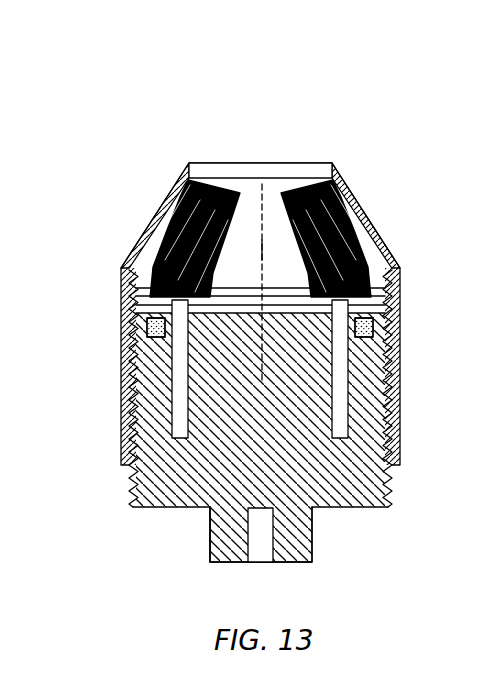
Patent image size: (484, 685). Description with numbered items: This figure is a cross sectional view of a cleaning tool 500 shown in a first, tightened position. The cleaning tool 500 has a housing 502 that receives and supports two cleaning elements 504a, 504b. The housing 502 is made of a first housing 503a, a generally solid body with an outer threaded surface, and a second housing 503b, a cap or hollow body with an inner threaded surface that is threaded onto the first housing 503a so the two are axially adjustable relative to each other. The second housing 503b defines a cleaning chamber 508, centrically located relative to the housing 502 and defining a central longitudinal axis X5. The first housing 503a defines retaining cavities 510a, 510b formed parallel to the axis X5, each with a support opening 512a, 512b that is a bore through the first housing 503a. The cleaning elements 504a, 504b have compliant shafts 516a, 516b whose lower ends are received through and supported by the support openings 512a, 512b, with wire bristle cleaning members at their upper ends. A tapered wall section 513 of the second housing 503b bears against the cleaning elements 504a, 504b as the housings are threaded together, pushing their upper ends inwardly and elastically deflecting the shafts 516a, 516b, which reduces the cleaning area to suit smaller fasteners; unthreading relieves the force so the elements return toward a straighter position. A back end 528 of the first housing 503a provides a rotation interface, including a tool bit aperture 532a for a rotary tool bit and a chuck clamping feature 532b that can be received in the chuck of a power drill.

The cleaning tool 500 is at (253, 108).
The housing 502 is at (112, 292).
The first housing 503a is at (137, 489).
The second housing 503b is at (160, 207).
The cleaning element 504a is at (158, 252).
The cleaning element 504b is at (365, 252).
The cleaning chamber 508 is at (263, 181).
The tapered wall section 513 is at (300, 170).
The retaining cavity 510a is at (158, 352).
The retaining cavity 510b is at (360, 362).
The support opening 512a is at (105, 351).
The support opening 512b is at (412, 351).
The shaft 516a is at (178, 407).
The shaft 516b is at (345, 425).
The back end 528 is at (297, 517).
The tool bit aperture 532a is at (263, 548).
The chuck clamping feature 532b is at (210, 548).
The central longitudinal axis X5 is at (264, 246).